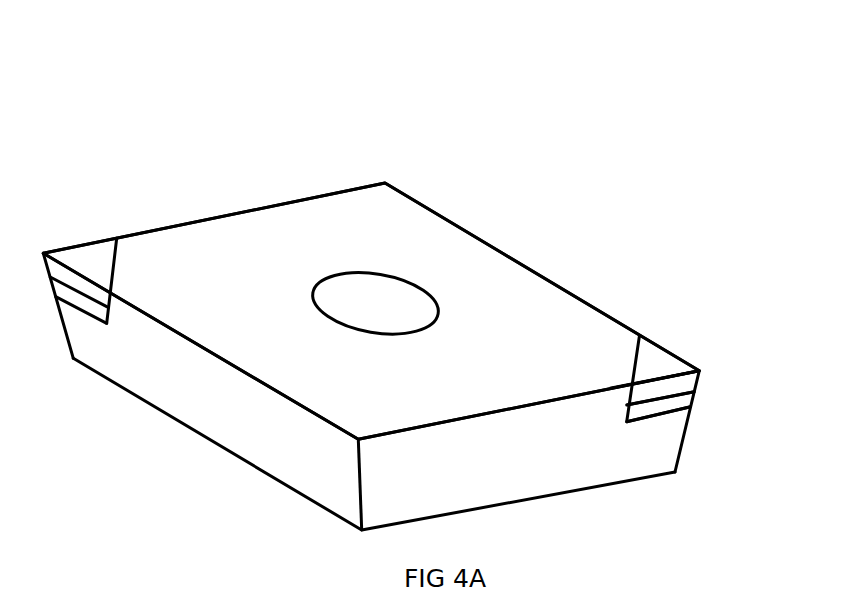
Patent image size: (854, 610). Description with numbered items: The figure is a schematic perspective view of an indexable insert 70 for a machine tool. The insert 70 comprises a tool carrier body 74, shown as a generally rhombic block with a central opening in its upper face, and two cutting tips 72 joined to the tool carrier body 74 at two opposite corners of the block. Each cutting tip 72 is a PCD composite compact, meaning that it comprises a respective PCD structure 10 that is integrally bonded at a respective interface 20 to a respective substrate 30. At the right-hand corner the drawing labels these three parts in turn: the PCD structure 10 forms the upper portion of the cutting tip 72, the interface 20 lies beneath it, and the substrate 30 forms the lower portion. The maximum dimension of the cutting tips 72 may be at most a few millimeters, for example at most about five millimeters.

The insert 70 is at (212, 146).
The tool carrier body 74 is at (315, 231).
The cutting tip 72 is at (86, 253).
The PCD structure 10 is at (701, 374).
The interface 20 is at (695, 394).
The substrate 30 is at (694, 402).